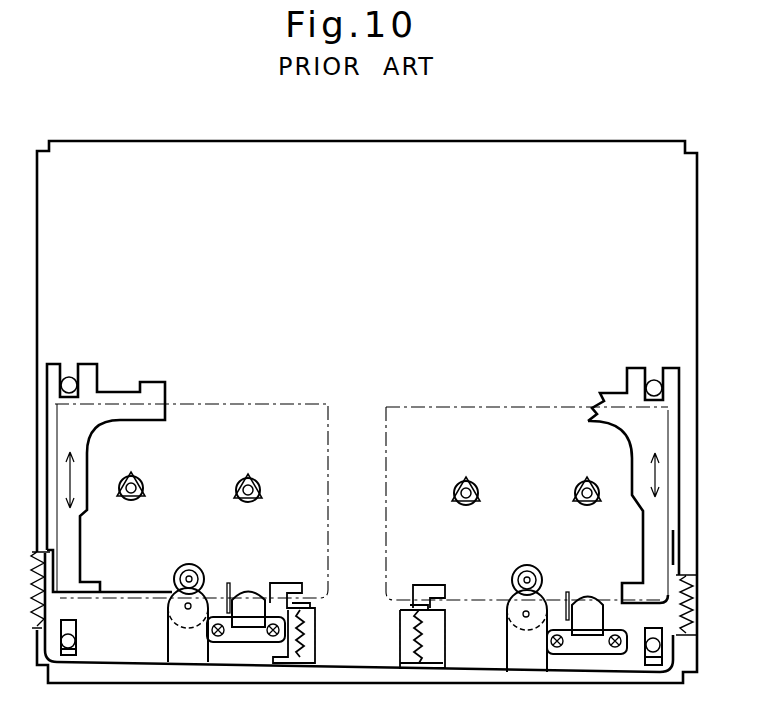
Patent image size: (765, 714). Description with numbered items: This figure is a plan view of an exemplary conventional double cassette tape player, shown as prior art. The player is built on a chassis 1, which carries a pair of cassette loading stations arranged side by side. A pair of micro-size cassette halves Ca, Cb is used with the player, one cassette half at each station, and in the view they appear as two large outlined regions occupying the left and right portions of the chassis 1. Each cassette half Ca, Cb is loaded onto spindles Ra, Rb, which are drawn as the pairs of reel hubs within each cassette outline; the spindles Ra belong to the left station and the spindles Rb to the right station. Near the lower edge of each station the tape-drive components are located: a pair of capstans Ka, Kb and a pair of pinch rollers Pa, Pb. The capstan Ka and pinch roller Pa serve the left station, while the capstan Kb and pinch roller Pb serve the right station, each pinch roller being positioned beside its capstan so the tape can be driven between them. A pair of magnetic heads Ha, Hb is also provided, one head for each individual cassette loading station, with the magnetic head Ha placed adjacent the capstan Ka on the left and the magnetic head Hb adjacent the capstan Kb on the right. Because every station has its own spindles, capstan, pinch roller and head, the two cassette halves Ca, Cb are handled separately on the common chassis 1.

The chassis 1 is at (682, 287).
The cassette half Ca is at (260, 412).
The cassette half Cb is at (470, 412).
The spindle Ra is at (144, 488).
The spindle Rb is at (453, 493).
The capstan Ka is at (222, 556).
The capstan Kb is at (538, 571).
The magnetic head Ha is at (250, 590).
The magnetic head Hb is at (586, 594).
The pinch roller Pa is at (171, 611).
The pinch roller Pb is at (506, 616).